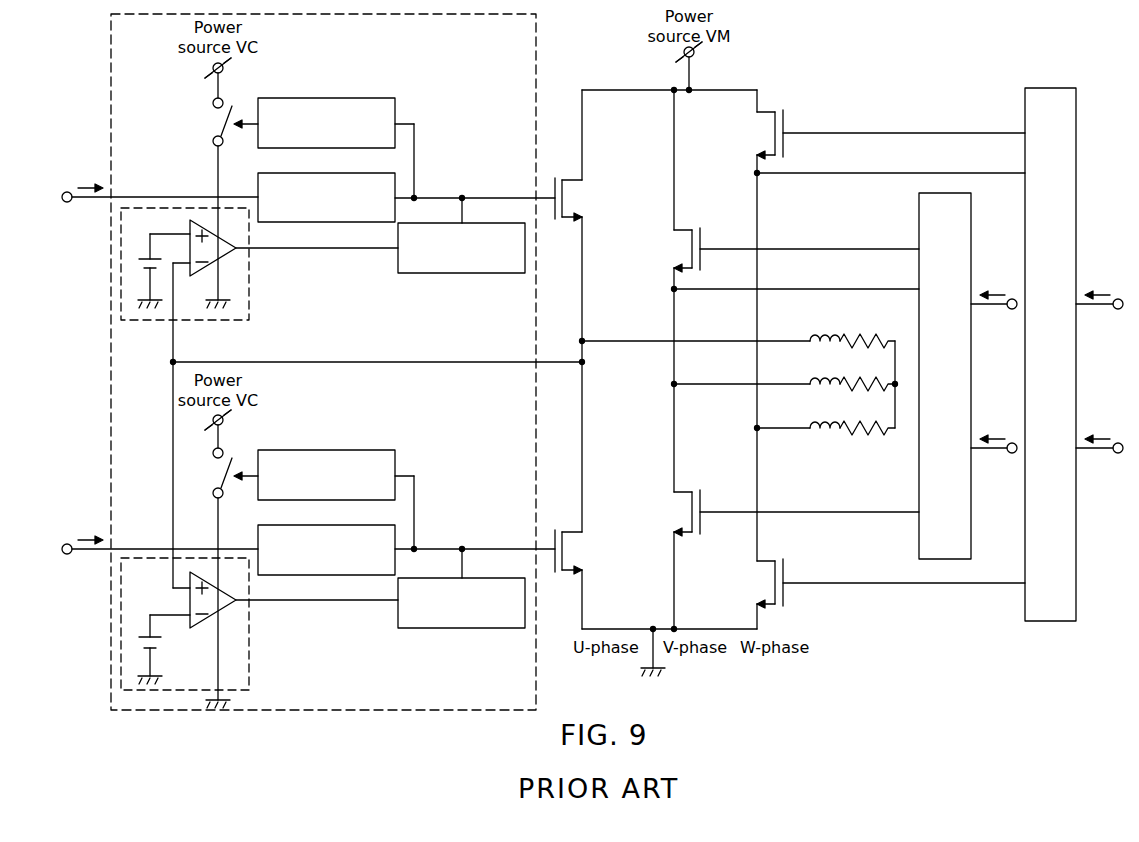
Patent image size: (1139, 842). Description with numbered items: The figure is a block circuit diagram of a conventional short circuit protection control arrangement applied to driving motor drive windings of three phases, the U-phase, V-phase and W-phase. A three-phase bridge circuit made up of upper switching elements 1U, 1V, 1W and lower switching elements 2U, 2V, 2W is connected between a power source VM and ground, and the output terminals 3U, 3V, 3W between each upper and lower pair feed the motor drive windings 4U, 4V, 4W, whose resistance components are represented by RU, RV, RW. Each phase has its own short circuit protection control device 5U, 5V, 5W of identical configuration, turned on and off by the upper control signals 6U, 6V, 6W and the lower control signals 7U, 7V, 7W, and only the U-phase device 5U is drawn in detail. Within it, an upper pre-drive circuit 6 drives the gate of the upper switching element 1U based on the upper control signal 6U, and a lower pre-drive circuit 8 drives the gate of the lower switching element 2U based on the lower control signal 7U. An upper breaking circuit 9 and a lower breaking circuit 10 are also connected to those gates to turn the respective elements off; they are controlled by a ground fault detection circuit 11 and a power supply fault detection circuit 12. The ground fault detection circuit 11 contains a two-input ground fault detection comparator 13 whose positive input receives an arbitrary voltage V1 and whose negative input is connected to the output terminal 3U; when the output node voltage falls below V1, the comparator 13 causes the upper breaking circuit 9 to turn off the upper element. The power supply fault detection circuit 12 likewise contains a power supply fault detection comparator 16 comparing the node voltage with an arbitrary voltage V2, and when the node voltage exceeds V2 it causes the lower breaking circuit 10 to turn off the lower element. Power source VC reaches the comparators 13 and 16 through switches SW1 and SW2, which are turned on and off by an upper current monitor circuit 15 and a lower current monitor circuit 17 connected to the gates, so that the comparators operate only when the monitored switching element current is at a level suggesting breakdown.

The upper switching element 1U is at (581, 178).
The lower switching element 2U is at (581, 531).
The upper switching element 1V is at (697, 230).
The lower switching element 2V is at (674, 500).
The upper switching element 1W is at (759, 115).
The lower switching element 2W is at (759, 566).
The output terminal 3U is at (491, 425).
The output terminal 3V is at (741, 394).
The output terminal 3W is at (783, 438).
The motor drive winding 4U is at (810, 341).
The motor drive winding 4V is at (810, 384).
The motor drive winding 4W is at (810, 428).
The resistance component RU is at (867, 353).
The resistance component RV is at (867, 396).
The resistance component RW is at (867, 440).
The short circuit protection control device 5U is at (540, 43).
The short circuit protection control device 5V is at (971, 533).
The short circuit protection control device 5W is at (1076, 596).
The upper pre-drive circuit 6 is at (326, 184).
The lower pre-drive circuit 8 is at (326, 537).
The upper breaking circuit 9 is at (461, 235).
The lower breaking circuit 10 is at (461, 590).
The ground fault detection circuit 11 is at (206, 264).
The power supply fault detection circuit 12 is at (206, 624).
The ground fault detection comparator 13 is at (200, 278).
The power supply fault detection comparator 16 is at (200, 630).
The upper current monitor circuit 15 is at (326, 108).
The lower current monitor circuit 17 is at (326, 460).
The upper control signal 6U is at (160, 183).
The lower control signal 7U is at (160, 535).
The upper control signal 6V is at (994, 291).
The lower control signal 7V is at (994, 435).
The upper control signal 6W is at (1099, 291).
The lower control signal 7W is at (1099, 435).
The switch SW1 is at (210, 122).
The switch SW2 is at (210, 473).
The voltage V1 is at (158, 271).
The voltage V2 is at (158, 649).